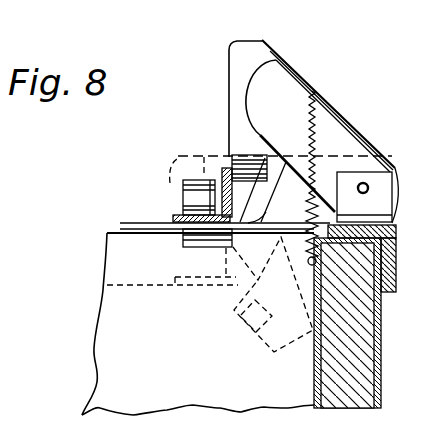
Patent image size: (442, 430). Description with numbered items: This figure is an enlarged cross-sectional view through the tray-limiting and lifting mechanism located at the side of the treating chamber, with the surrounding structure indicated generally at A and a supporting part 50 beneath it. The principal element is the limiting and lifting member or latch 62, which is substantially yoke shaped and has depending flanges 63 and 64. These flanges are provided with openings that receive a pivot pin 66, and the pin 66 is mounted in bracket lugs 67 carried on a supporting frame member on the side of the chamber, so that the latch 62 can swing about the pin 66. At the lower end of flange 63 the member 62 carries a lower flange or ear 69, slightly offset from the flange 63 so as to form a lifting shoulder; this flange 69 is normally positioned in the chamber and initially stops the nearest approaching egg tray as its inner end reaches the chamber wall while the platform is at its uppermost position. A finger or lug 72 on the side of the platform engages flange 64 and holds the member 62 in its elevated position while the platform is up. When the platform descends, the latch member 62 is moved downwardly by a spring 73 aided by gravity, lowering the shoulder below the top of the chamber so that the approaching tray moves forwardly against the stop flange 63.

The base member A is at (102, 257).
The base plate 50 is at (158, 222).
The limiting and lifting member or latch 62 is at (334, 117).
The depending flange 63 is at (232, 99).
The depending flange 64 is at (265, 134).
The pivot pin 66 is at (367, 184).
The bracket lugs 67 is at (385, 191).
The lower flange or ear 69 is at (193, 247).
The finger or lug 72 is at (290, 172).
The spring 73 is at (315, 210).